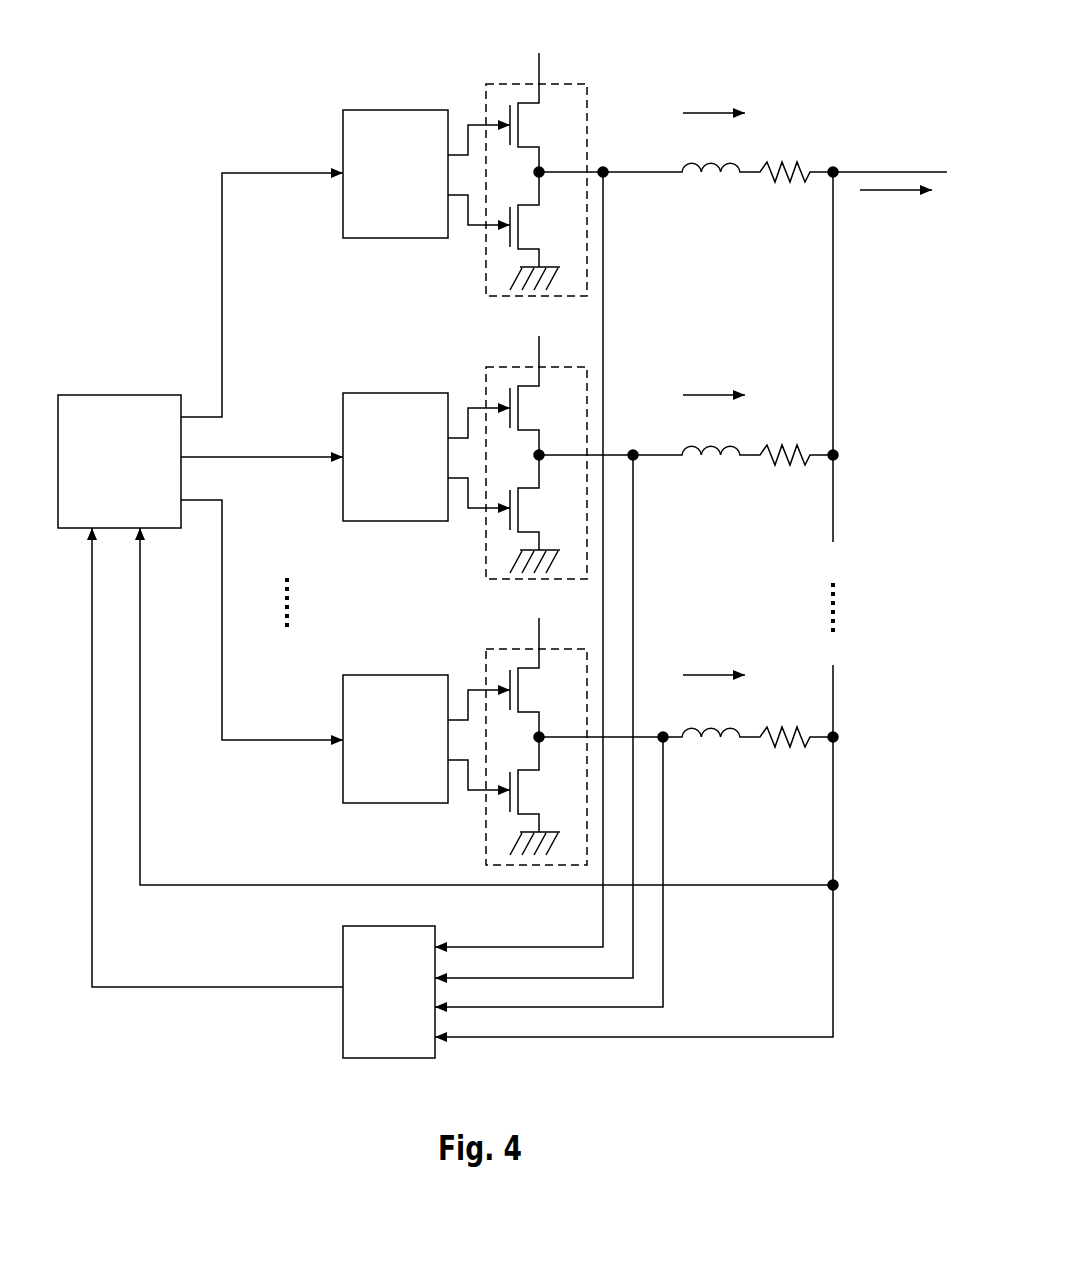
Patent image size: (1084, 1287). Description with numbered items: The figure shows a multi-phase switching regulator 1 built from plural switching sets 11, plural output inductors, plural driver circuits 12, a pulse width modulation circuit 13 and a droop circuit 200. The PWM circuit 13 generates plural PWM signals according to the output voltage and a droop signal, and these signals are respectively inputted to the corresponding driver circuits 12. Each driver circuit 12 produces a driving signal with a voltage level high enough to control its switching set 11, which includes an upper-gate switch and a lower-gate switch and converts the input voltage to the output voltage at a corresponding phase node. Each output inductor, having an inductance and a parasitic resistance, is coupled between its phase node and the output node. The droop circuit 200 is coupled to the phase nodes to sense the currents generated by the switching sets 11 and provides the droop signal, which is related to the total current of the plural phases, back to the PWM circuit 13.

The multi-phase switching regulator 1 is at (838, 78).
The switching set 11 is at (510, 84).
The driver circuit 12 is at (410, 224).
The pulse width modulation (PWM) circuit 13 is at (107, 522).
The droop circuit 200 is at (369, 1043).